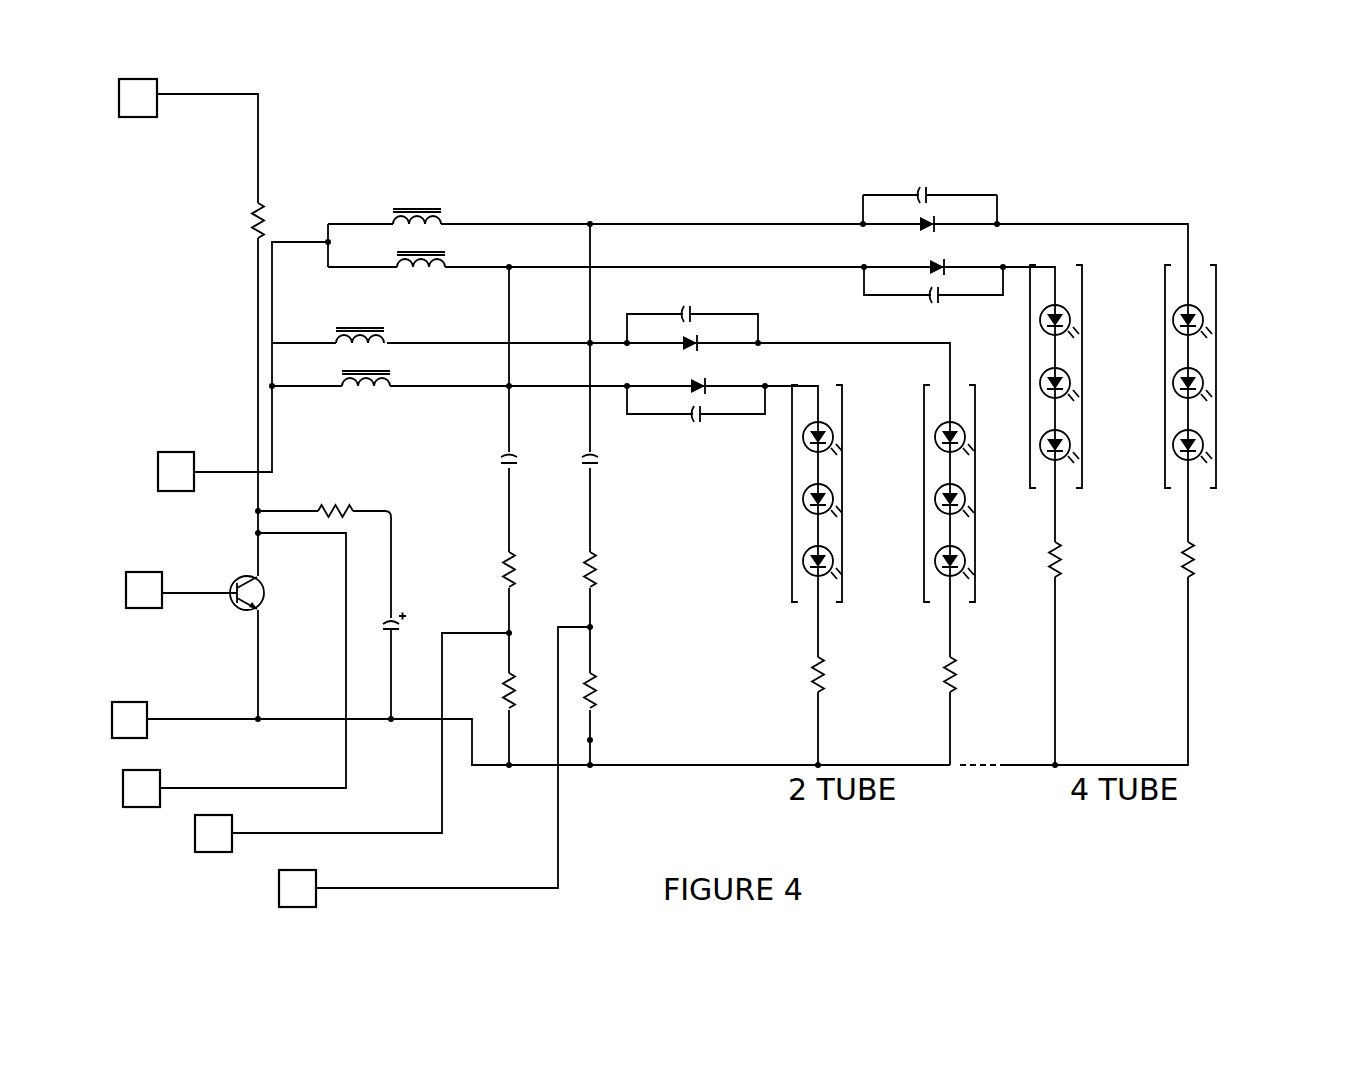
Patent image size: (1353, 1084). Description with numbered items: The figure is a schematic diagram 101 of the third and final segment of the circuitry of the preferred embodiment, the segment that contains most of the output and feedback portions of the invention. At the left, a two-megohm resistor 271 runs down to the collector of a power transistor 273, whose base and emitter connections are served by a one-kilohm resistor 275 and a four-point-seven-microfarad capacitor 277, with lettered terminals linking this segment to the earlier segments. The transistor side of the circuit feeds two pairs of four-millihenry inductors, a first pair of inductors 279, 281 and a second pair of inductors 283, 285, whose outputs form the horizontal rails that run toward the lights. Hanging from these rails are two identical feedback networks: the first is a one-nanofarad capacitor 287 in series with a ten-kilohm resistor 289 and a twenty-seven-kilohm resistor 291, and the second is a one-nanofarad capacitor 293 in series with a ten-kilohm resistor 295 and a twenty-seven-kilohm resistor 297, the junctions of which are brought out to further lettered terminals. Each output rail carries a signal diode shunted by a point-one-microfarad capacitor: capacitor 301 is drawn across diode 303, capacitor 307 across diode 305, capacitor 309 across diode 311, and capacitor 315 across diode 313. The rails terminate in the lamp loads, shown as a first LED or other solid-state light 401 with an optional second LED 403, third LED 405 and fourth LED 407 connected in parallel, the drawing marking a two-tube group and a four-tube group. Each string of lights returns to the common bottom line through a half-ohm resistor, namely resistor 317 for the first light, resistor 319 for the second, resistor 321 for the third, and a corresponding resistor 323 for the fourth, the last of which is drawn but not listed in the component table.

The schematic diagram 101 is at (655, 190).
The resistor 271 is at (250, 242).
The transistor 273 is at (235, 565).
The resistor 275 is at (357, 498).
The capacitor 277 is at (390, 657).
The inductor 279 is at (387, 217).
The inductor 281 is at (452, 260).
The inductor 283 is at (390, 337).
The inductor 285 is at (395, 380).
The capacitor 287 is at (500, 480).
The resistor 289 is at (500, 598).
The resistor 291 is at (517, 725).
The capacitor 293 is at (597, 439).
The resistor 295 is at (618, 565).
The resistor 297 is at (595, 663).
The capacitor 301 is at (697, 303).
The diode 303 is at (708, 335).
The diode 305 is at (713, 392).
The capacitor 307 is at (703, 422).
The capacitor 309 is at (940, 185).
The diode 311 is at (950, 210).
The diode 313 is at (963, 257).
The capacitor 315 is at (960, 288).
The resistor 317 is at (820, 687).
The resistor 319 is at (957, 687).
The resistor 321 is at (1057, 562).
The resistor 323 is at (1200, 600).
The first LED or other solid state light 401 is at (846, 497).
The second LED or other solid state light 403 is at (985, 410).
The third LED or other solid state light 405 is at (1083, 338).
The fourth LED or other solid state light 407 is at (1218, 360).